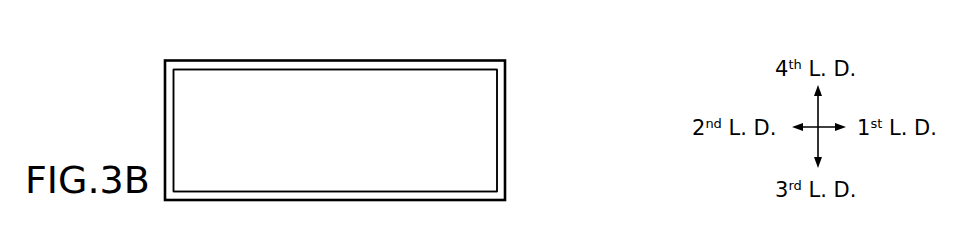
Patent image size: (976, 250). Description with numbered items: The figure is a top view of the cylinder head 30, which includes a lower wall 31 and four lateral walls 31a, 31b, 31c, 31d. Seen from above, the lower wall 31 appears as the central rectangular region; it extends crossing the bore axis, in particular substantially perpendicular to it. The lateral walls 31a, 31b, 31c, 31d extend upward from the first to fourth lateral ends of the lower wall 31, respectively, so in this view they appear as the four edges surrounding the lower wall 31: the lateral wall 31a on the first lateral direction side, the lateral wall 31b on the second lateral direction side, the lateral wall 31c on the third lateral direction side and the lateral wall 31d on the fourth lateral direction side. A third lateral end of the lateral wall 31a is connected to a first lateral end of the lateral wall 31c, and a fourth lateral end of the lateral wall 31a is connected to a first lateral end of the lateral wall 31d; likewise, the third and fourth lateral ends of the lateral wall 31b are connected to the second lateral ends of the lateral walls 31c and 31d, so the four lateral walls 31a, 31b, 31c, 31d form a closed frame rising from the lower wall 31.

The cylinder head 30 is at (254, 51).
The lower wall 31 is at (336, 131).
The lateral wall 31a is at (499, 125).
The lateral wall 31b is at (167, 133).
The lateral wall 31c is at (343, 198).
The lateral wall 31d is at (343, 63).